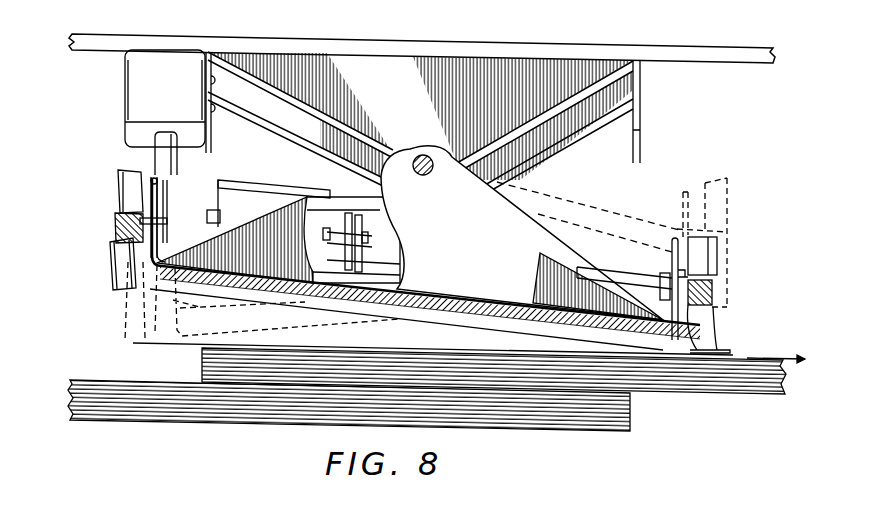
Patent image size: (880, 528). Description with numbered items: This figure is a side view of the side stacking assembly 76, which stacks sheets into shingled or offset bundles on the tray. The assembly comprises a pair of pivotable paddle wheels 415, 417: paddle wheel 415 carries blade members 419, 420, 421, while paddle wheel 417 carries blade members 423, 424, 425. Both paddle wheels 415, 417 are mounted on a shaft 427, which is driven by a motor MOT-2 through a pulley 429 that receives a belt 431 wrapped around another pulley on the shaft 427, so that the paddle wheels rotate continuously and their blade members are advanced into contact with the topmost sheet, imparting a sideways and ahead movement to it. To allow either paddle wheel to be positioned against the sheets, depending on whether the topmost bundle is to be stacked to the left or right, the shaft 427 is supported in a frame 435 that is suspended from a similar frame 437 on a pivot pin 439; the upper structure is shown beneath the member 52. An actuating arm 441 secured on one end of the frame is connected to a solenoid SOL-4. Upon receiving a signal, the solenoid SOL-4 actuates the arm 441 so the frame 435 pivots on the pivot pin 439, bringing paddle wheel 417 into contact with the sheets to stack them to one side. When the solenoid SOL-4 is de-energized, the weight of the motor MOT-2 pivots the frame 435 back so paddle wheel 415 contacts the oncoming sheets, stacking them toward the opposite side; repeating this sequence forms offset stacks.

The support rail 52 is at (690, 46).
The side stacking assembly 76 is at (658, 150).
The paddle wheel 415 is at (98, 220).
The paddle wheel 417 is at (802, 217).
The blade member 419 is at (117, 193).
The blade member 420 is at (114, 228).
The blade member 421 is at (110, 268).
The blade member 423 is at (720, 262).
The blade member 424 is at (722, 290).
The blade member 425 is at (714, 335).
The shaft 427 is at (628, 274).
The pulley 429 is at (352, 230).
The belt 431 is at (362, 240).
The frame 435 is at (533, 216).
The frame 437 is at (632, 128).
The pivot pin 439 is at (422, 155).
The actuating arm 441 is at (165, 176).
The solenoid SOL-4 is at (125, 90).
The motor MOT-2 is at (302, 190).